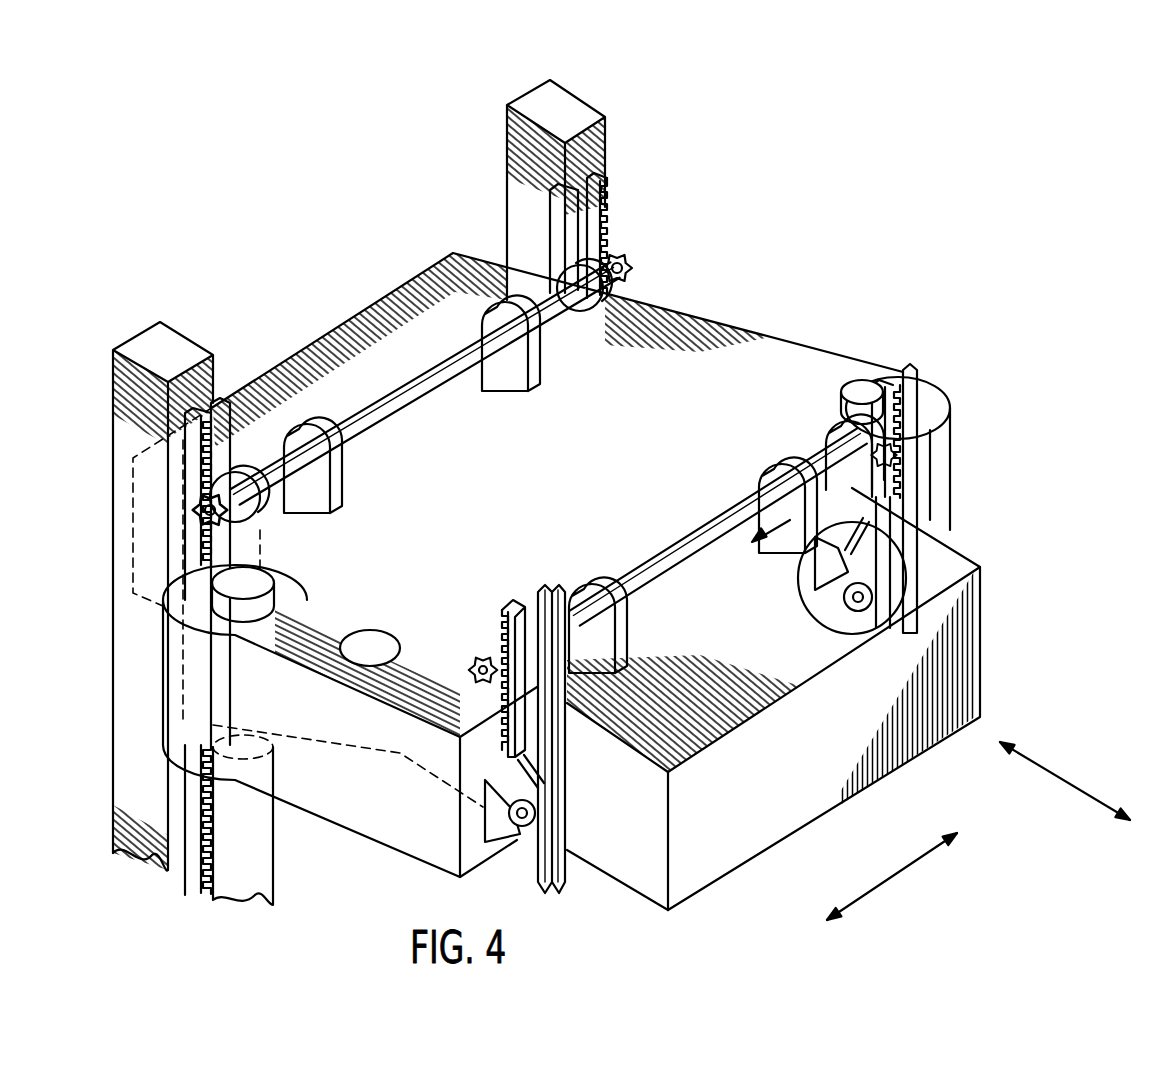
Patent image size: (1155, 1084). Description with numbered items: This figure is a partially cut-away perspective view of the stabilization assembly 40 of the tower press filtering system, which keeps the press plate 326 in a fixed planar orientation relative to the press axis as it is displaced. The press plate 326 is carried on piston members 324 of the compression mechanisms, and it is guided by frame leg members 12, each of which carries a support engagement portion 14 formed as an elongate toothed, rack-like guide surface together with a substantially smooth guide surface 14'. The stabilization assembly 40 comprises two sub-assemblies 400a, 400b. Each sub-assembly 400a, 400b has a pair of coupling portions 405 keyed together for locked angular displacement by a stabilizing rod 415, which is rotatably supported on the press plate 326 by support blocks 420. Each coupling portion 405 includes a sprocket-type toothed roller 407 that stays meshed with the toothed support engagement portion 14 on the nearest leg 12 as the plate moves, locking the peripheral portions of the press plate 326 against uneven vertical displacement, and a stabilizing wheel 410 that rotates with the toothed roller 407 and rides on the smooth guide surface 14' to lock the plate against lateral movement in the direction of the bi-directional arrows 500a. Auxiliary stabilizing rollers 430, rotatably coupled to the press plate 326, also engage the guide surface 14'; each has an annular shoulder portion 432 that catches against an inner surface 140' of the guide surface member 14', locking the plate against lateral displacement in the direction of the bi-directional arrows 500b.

The leg member 12 is at (565, 105).
The support engagement portion 14 is at (544, 516).
The guide surface 14' is at (605, 518).
The inner surface 140' is at (508, 538).
The stabilization assembly 40 is at (770, 290).
The piston member 324 is at (274, 590).
The press plate 326 is at (935, 705).
The sub-assembly 400a is at (870, 528).
The sub-assembly 400b is at (356, 400).
The coupling portion 405 is at (612, 290).
The toothed roller 407 is at (622, 258).
The stabilizing wheel 410 is at (638, 318).
The stabilizing rod 415 is at (440, 383).
The support block 420 is at (535, 345).
The auxiliary stabilizing roller 430 is at (522, 835).
The annular shoulder portion 432 is at (542, 778).
The bi-directional arrows 500a is at (1072, 785).
The bi-directional arrows 500b is at (905, 880).